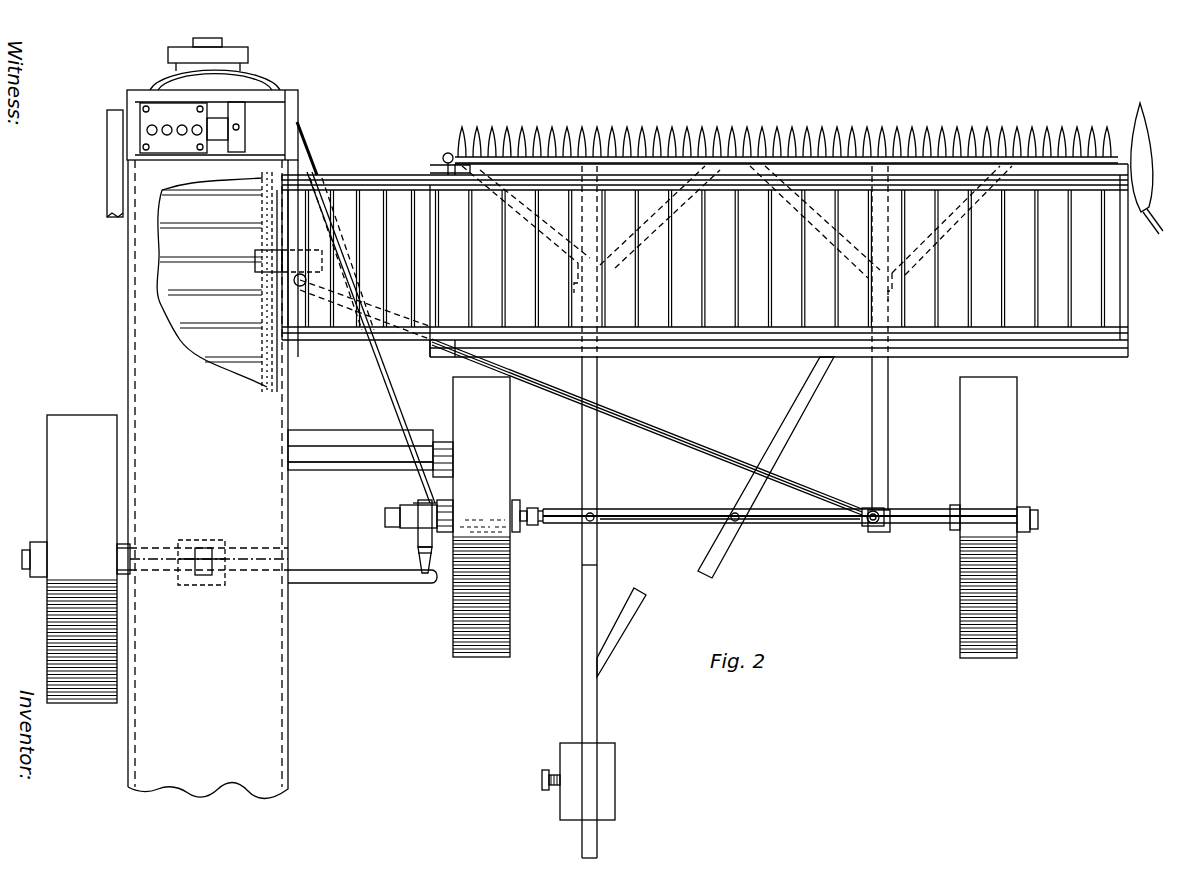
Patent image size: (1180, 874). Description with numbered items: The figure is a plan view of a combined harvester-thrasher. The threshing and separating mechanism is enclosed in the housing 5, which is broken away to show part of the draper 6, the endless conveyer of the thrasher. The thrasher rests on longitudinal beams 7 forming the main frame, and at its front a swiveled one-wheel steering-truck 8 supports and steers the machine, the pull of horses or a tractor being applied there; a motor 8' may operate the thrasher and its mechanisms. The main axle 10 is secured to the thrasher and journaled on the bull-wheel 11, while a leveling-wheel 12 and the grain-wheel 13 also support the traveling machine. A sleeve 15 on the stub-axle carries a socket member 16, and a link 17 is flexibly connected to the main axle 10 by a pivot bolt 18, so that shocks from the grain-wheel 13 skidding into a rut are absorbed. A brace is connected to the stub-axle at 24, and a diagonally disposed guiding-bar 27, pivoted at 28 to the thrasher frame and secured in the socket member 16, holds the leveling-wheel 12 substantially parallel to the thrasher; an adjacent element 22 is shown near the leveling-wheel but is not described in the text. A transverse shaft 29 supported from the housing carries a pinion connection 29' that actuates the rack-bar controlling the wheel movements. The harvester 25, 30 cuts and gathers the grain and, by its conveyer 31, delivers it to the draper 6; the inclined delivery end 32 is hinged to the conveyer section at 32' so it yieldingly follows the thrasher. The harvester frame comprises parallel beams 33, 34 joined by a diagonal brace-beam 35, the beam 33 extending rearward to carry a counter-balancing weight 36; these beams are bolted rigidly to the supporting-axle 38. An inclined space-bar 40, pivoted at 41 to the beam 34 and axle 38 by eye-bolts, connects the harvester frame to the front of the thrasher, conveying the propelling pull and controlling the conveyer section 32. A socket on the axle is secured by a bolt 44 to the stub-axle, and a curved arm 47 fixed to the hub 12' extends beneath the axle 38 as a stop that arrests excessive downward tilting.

The housing 5 is at (208, 479).
The draper 6 is at (578, 535).
The beams 7 is at (452, 418).
The steering-truck 8 is at (202, 197).
The motor 8' is at (205, 127).
The main axle 10 is at (149, 572).
The bull-wheel 11 is at (69, 559).
The leveling-wheel 12 is at (504, 517).
The hub 12' is at (532, 500).
The grain-wheel 13 is at (1018, 459).
The sleeve 15 is at (405, 525).
The socket member 16 is at (420, 540).
The link 17 is at (334, 580).
The pivot bolt 18 is at (192, 540).
The gear 22 is at (450, 500).
The brace connection 24 is at (385, 515).
The harvester 25 is at (905, 135).
The guiding-bar 27 is at (385, 390).
The pivot 28 is at (300, 127).
The transverse shaft 29 is at (360, 469).
The pinion connection 29' is at (468, 459).
The harvester section 30 is at (1047, 335).
The conveyer 31 is at (471, 263).
The delivery end 32 is at (522, 229).
The hinge 32' is at (723, 233).
The beam 33 is at (598, 467).
The beam 34 is at (890, 438).
The diagonal brace-beam 35 is at (792, 435).
The counter-balancing weight 36 is at (617, 753).
The supporting-axle 38 is at (812, 522).
The space-bar 40 is at (689, 443).
The pivot 41 is at (873, 527).
The bolt 44 is at (525, 530).
The curved arm 47 is at (560, 510).